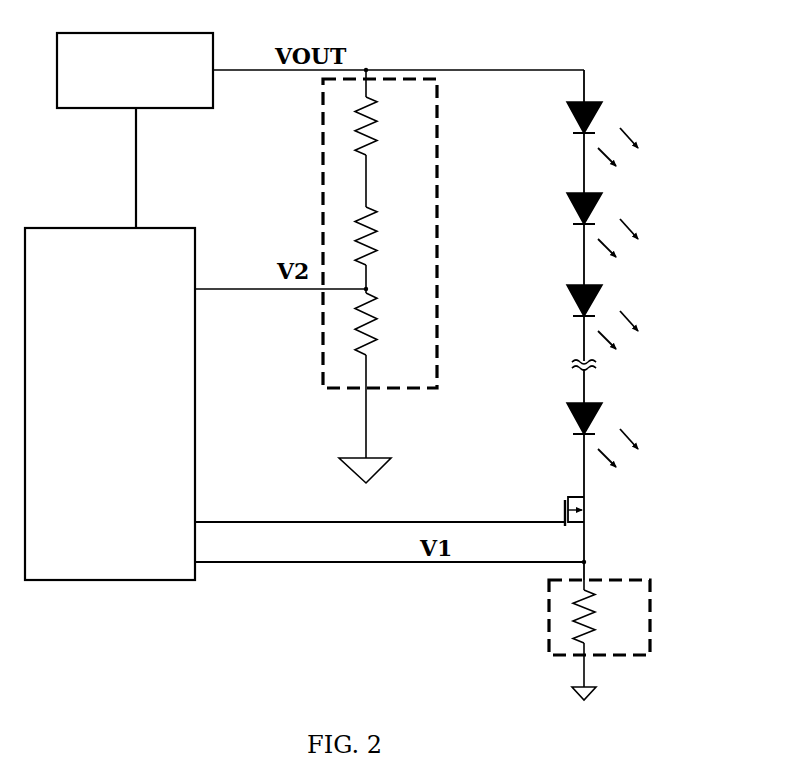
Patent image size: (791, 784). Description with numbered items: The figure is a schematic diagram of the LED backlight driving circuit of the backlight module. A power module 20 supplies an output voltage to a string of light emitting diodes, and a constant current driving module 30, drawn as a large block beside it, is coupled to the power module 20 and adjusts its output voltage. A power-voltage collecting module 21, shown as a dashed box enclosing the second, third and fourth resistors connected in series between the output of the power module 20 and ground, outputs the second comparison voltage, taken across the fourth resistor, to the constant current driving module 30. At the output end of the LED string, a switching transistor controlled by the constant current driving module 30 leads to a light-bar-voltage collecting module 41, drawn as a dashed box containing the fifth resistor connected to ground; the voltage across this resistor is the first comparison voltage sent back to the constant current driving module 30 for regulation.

The power module 20 is at (135, 70).
The constant current driving module 30 is at (110, 404).
The power-voltage collecting module 21 is at (422, 79).
The light-bar-voltage collecting module 41 is at (622, 580).